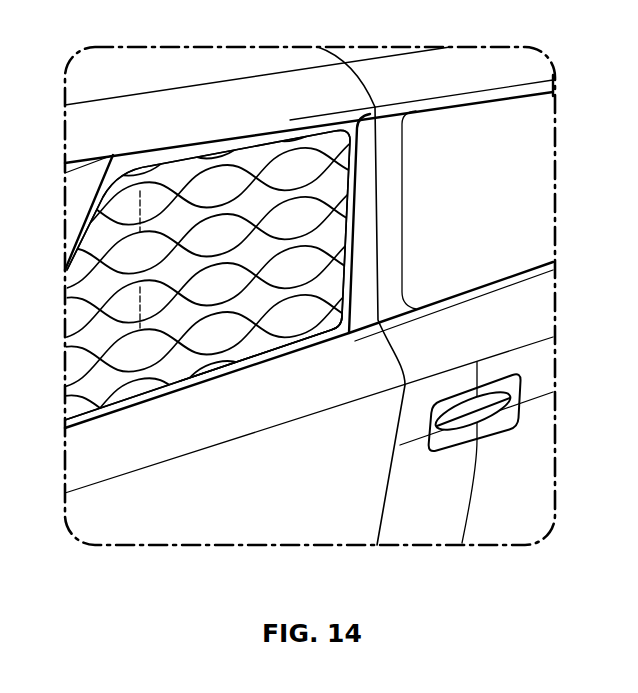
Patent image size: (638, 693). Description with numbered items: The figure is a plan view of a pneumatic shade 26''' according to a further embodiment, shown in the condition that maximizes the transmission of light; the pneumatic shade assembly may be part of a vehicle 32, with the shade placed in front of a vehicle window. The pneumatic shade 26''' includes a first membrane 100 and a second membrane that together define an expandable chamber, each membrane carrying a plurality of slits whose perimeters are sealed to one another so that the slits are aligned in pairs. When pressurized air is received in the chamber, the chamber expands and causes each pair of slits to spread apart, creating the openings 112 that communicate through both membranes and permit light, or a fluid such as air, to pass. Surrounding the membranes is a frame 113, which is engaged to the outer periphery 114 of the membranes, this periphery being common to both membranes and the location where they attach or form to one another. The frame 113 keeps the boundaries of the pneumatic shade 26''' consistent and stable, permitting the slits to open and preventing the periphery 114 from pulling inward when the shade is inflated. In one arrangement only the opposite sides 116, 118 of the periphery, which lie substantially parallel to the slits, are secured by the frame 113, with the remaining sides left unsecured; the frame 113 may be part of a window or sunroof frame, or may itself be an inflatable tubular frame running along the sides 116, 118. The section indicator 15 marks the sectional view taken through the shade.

The vehicle door 32 is at (523, 42).
The window covering assembly 26''' is at (207, 214).
The frame 116 is at (282, 138).
The window frame 114 is at (353, 162).
The frame members 112 is at (318, 220).
The pillar 113 is at (350, 288).
The mesh panel 100 is at (247, 347).
The lower frame rail 118 is at (327, 343).
The section line of FIG. 15 is at (109, 212).